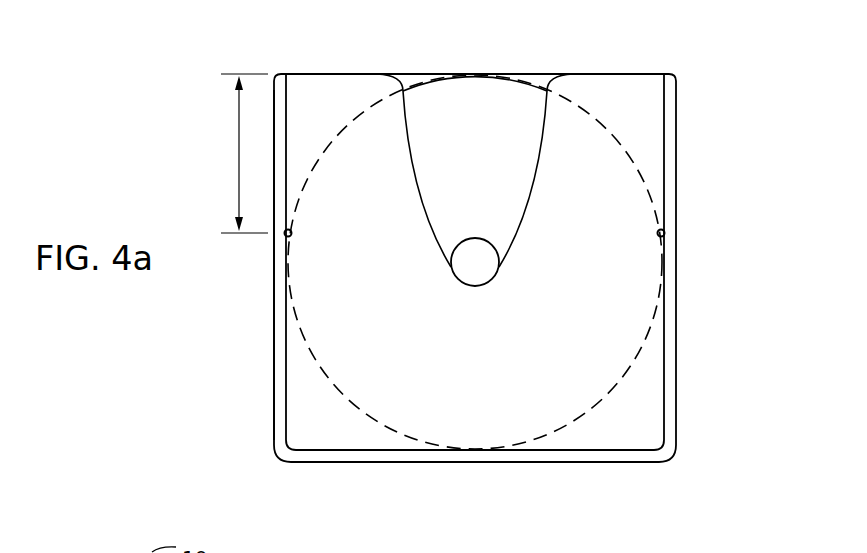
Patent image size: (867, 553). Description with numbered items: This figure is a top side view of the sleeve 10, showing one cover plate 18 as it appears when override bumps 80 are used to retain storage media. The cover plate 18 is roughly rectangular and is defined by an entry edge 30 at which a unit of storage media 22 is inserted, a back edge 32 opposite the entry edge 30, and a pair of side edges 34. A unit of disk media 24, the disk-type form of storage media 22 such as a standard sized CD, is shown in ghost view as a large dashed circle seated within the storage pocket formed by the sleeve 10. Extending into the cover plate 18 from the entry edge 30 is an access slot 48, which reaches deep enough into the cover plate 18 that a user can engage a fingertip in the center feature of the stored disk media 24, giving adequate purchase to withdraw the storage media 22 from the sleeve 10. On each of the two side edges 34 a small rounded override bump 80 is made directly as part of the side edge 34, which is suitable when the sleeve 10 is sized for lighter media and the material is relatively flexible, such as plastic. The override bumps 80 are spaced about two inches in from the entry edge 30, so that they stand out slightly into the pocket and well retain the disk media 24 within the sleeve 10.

The sleeve 10 is at (704, 96).
The cover plate 18 is at (641, 110).
The storage media 22 is at (510, 144).
The disk media 24 is at (475, 111).
The entry edge 30 is at (588, 74).
The back edge 32 is at (615, 463).
The side edge 34 is at (275, 402).
The access slot 48 is at (490, 201).
The override bump 80 is at (286, 236).